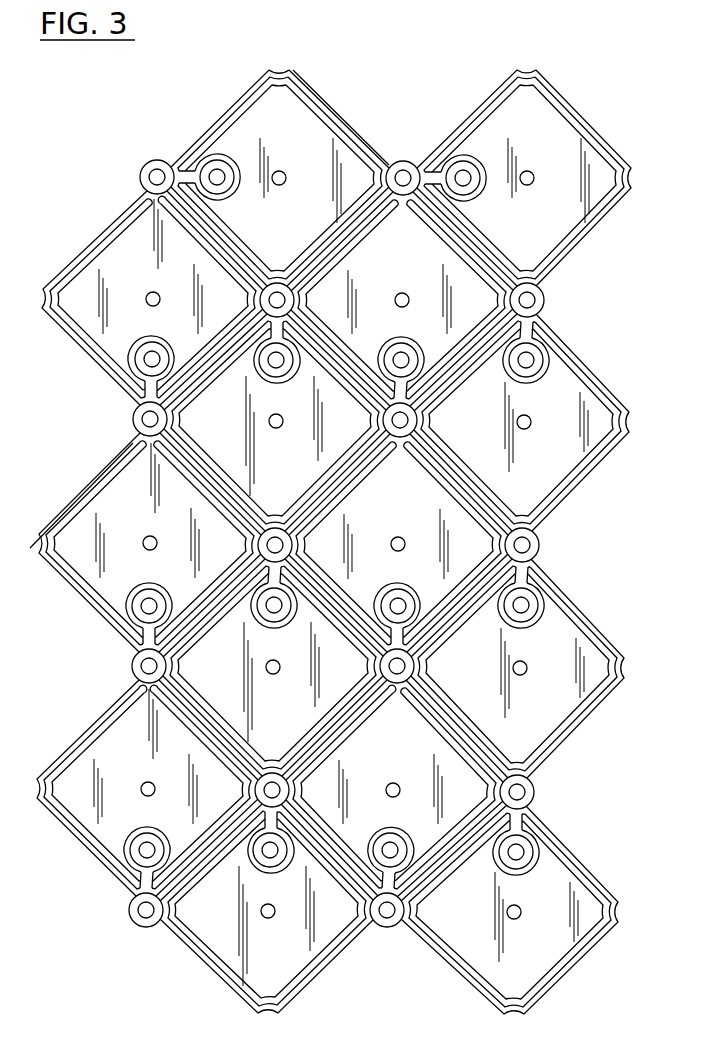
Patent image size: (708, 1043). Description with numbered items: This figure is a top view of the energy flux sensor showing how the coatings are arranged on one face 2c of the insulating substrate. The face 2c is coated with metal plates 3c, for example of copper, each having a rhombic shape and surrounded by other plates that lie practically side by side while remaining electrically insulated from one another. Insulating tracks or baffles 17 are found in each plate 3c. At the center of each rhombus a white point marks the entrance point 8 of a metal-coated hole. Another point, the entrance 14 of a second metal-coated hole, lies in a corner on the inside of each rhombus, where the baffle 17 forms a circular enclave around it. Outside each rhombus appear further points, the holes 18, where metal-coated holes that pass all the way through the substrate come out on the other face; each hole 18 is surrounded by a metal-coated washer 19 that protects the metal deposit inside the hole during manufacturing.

The face 2c is at (147, 942).
The metal plate 3c is at (563, 450).
The entrance point 8 is at (536, 177).
The entrance 14 is at (546, 362).
The insulating track 17 is at (343, 127).
The hole 18 is at (160, 166).
The washer 19 is at (139, 178).